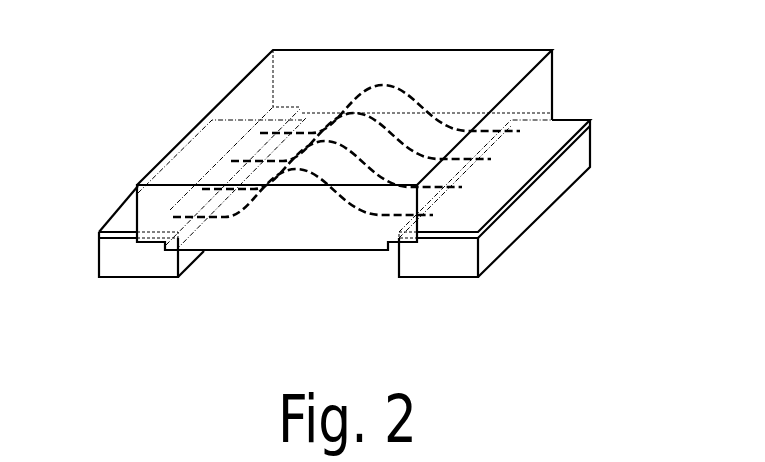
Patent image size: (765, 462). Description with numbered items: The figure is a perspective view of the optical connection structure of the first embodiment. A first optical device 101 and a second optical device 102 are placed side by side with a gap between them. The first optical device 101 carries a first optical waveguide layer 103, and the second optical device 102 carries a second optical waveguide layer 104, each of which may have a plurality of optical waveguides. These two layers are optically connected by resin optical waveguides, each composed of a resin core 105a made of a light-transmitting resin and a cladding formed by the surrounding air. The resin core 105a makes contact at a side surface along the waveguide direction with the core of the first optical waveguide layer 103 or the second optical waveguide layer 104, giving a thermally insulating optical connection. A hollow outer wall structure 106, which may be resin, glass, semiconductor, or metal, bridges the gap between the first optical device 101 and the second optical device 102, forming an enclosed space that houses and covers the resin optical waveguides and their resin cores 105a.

The first optical device 101 is at (138, 278).
The second optical device 102 is at (436, 278).
The first optical waveguide layer 103 is at (99, 236).
The second optical waveguide layer 104 is at (591, 121).
The resin core 105a is at (383, 84).
The outer wall structure 106 is at (553, 82).